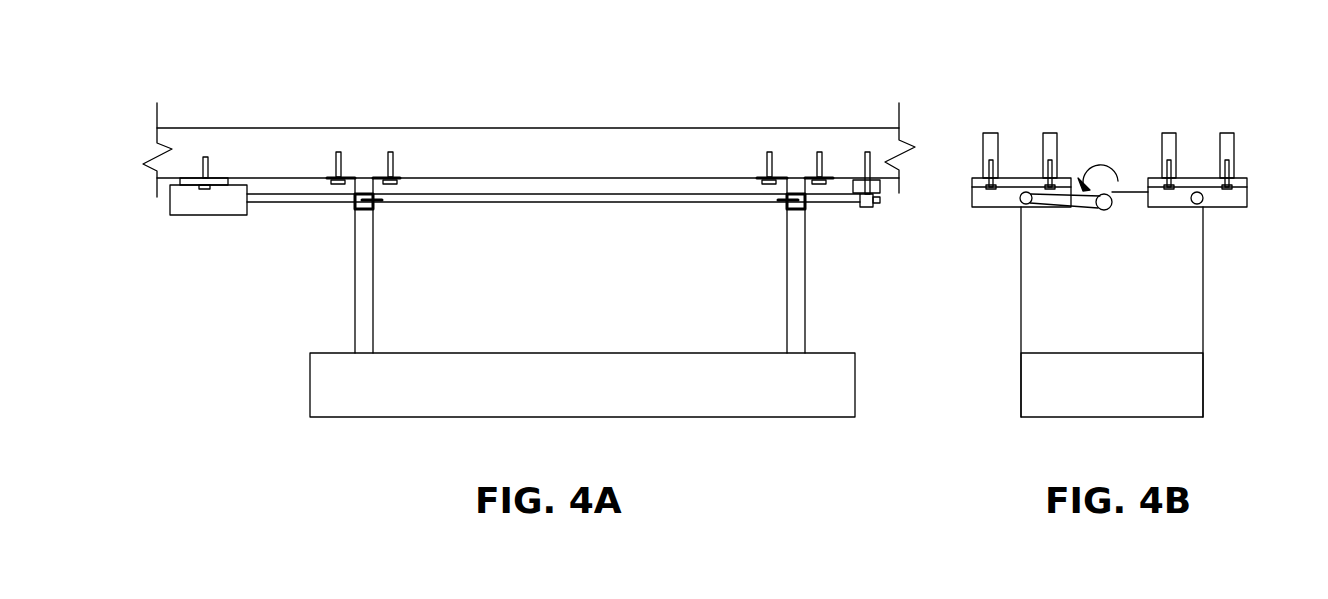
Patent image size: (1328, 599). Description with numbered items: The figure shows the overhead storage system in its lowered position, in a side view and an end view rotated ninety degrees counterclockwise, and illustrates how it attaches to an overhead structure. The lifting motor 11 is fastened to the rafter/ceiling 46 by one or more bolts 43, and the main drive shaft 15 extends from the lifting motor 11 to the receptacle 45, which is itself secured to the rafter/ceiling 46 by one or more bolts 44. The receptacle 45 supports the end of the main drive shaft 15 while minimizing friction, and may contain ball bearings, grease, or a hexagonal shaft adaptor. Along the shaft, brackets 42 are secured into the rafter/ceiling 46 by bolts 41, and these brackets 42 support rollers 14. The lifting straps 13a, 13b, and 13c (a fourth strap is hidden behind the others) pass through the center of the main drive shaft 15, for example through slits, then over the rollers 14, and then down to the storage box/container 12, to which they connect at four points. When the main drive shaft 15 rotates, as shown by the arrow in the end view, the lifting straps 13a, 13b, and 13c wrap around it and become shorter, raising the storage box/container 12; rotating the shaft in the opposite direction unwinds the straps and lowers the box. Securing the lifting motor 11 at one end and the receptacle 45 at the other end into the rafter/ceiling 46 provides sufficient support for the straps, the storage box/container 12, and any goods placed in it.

In FIG. 4A, the lifting motor 11 is at (209, 205).
In FIG. 4A, the storage box/container 12 is at (353, 373).
In FIG. 4B, the storage box/container 12 is at (1163, 382).
In FIG. 4A, the lifting strap 13a is at (365, 298).
In FIG. 4B, the lifting strap 13a is at (1204, 315).
In FIG. 4B, the lifting strap 13b is at (1021, 283).
In FIG. 4A, the lifting strap 13c is at (795, 292).
In FIG. 4A, the roller 14 is at (400, 203).
In FIG. 4B, the roller 14 is at (1200, 198).
In FIG. 4A, the main drive shaft 15 is at (612, 198).
In FIG. 4B, the main drive shaft 15 is at (1107, 195).
In FIG. 4A, the bolt 41 is at (393, 160).
In FIG. 4B, the bolt 41 is at (991, 160).
In FIG. 4A, the bracket 42 is at (378, 176).
In FIG. 4A, the bolt 43 is at (207, 167).
In FIG. 4A, the bolt 44 is at (868, 157).
In FIG. 4A, the receptacle 45 is at (868, 208).
In FIG. 4A, the rafter/ceiling 46 is at (517, 152).
In FIG. 4B, the rafter/ceiling 46 is at (1050, 142).